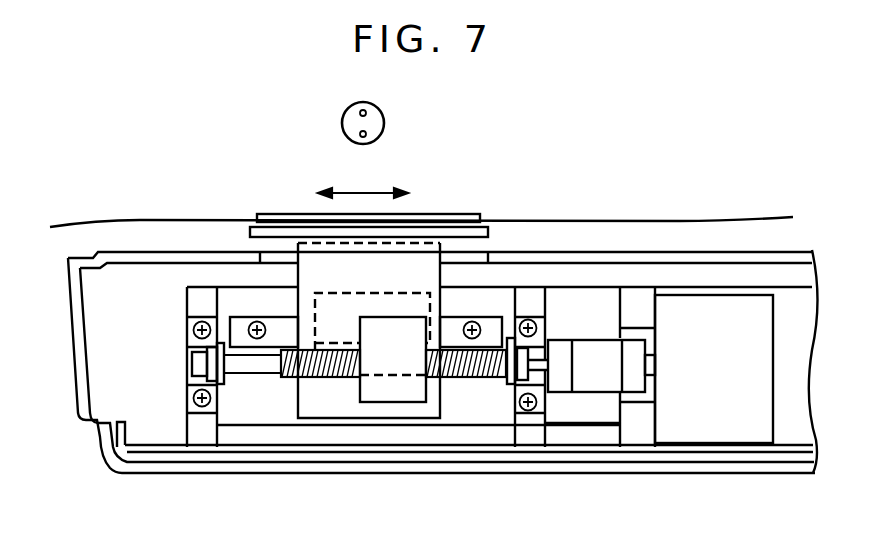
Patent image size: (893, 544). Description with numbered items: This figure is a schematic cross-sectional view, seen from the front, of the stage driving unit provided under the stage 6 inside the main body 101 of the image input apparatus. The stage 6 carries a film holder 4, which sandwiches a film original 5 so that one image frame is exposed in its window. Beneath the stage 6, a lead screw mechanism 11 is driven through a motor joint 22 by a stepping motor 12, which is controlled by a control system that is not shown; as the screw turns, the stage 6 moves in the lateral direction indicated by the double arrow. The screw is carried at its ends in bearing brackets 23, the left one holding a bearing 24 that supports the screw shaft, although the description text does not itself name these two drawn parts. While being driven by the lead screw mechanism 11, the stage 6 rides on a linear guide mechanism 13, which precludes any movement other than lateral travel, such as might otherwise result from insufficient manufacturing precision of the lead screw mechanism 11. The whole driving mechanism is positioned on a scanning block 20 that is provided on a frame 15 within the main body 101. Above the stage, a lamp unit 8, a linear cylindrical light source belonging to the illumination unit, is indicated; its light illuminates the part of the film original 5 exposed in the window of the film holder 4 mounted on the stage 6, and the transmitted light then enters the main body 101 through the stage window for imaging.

The film holder 4 is at (468, 212).
The film original 5 is at (693, 222).
The stage 6 is at (488, 234).
The lamp unit 8 is at (377, 123).
The lead screw mechanism 11 is at (463, 380).
The stepping motor 12 is at (757, 403).
The linear guide mechanism 13 is at (243, 322).
The frame 15 is at (140, 448).
The scanning block 20 is at (233, 433).
The motor joint 22 is at (593, 378).
The bearing bracket 23 is at (205, 328).
The bearing 24 is at (193, 348).
The main body 101 is at (88, 403).